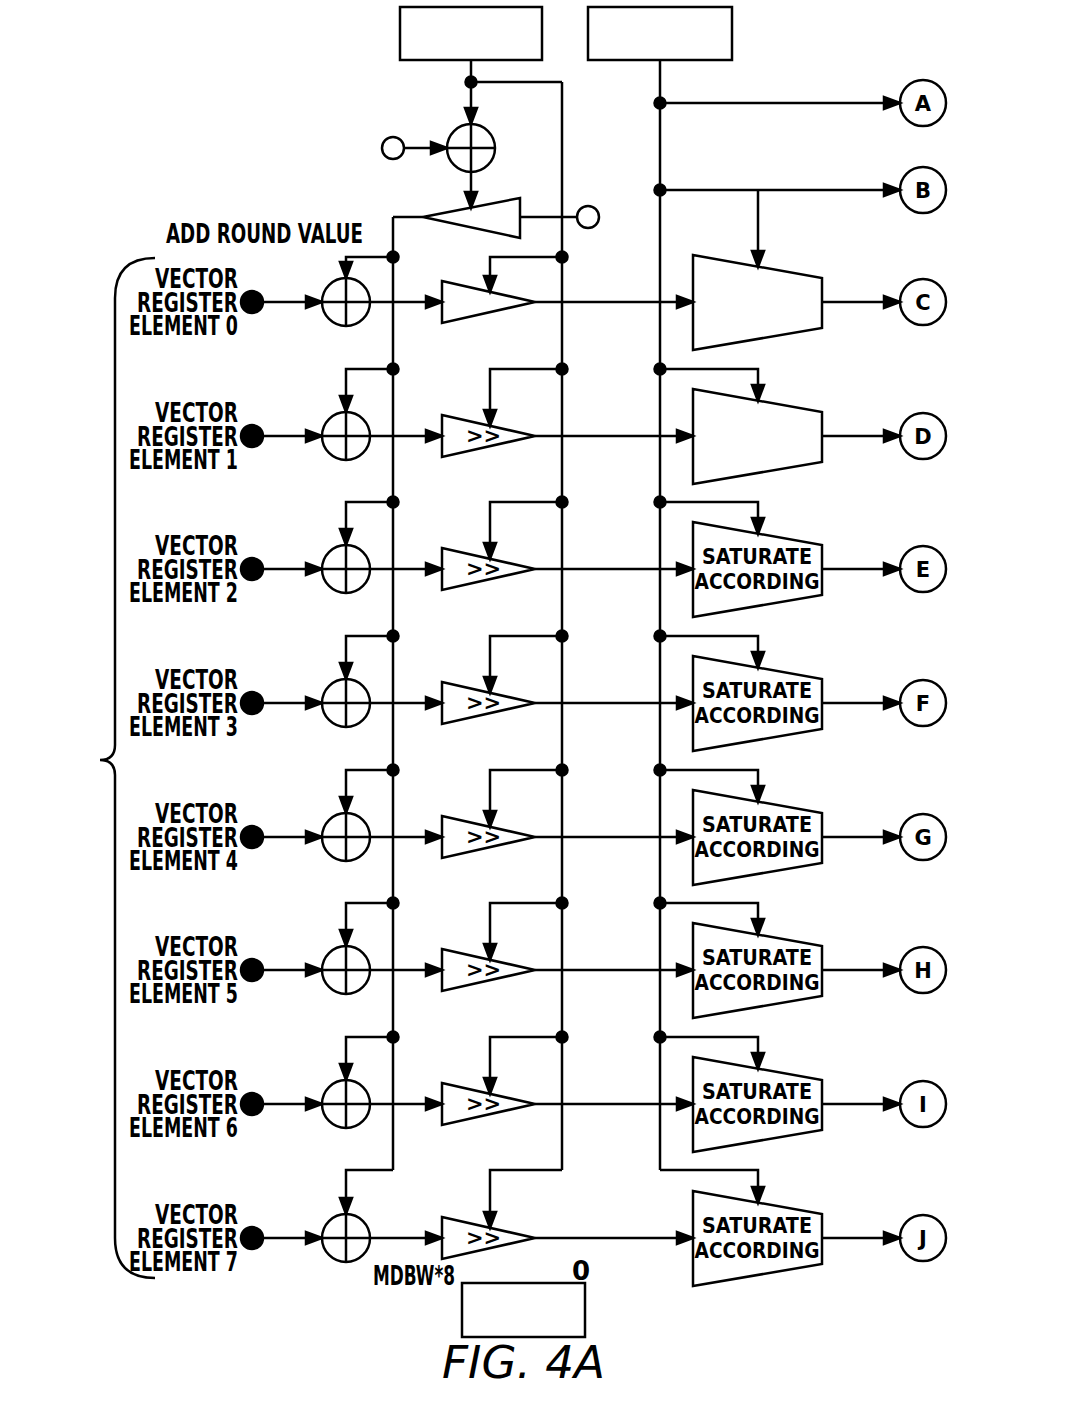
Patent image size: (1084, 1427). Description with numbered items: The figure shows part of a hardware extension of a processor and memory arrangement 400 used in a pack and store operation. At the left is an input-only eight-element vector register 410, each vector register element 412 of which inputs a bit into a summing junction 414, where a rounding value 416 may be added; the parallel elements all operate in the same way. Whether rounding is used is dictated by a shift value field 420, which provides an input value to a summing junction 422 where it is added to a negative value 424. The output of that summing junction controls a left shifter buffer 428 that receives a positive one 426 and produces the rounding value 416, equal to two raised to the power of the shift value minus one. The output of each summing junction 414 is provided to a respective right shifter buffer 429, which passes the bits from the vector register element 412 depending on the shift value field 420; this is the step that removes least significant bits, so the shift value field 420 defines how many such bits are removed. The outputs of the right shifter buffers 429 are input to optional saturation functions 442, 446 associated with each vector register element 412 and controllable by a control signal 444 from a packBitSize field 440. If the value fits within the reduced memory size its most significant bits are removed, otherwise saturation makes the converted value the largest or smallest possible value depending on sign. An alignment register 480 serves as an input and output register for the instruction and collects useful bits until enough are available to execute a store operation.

The processor and memory arrangement 400 is at (153, 80).
The 8-element vector register 410 is at (100, 760).
The vector register element 412 is at (281, 306).
The summing junction 414 is at (333, 324).
The rounding value 416 is at (370, 255).
The shift value field 420 is at (400, 33).
The summing junction 422 is at (456, 128).
The negative value 424 is at (391, 137).
The positive '1' 426 is at (589, 206).
The left shifter buffer 428 is at (502, 204).
The right shifter buffer 429 is at (490, 314).
The packBitSize field 440 is at (732, 34).
The saturation function 442 is at (787, 272).
The control signal 444 is at (706, 190).
The saturation function 446 is at (787, 406).
The alignment register 480 is at (585, 1310).